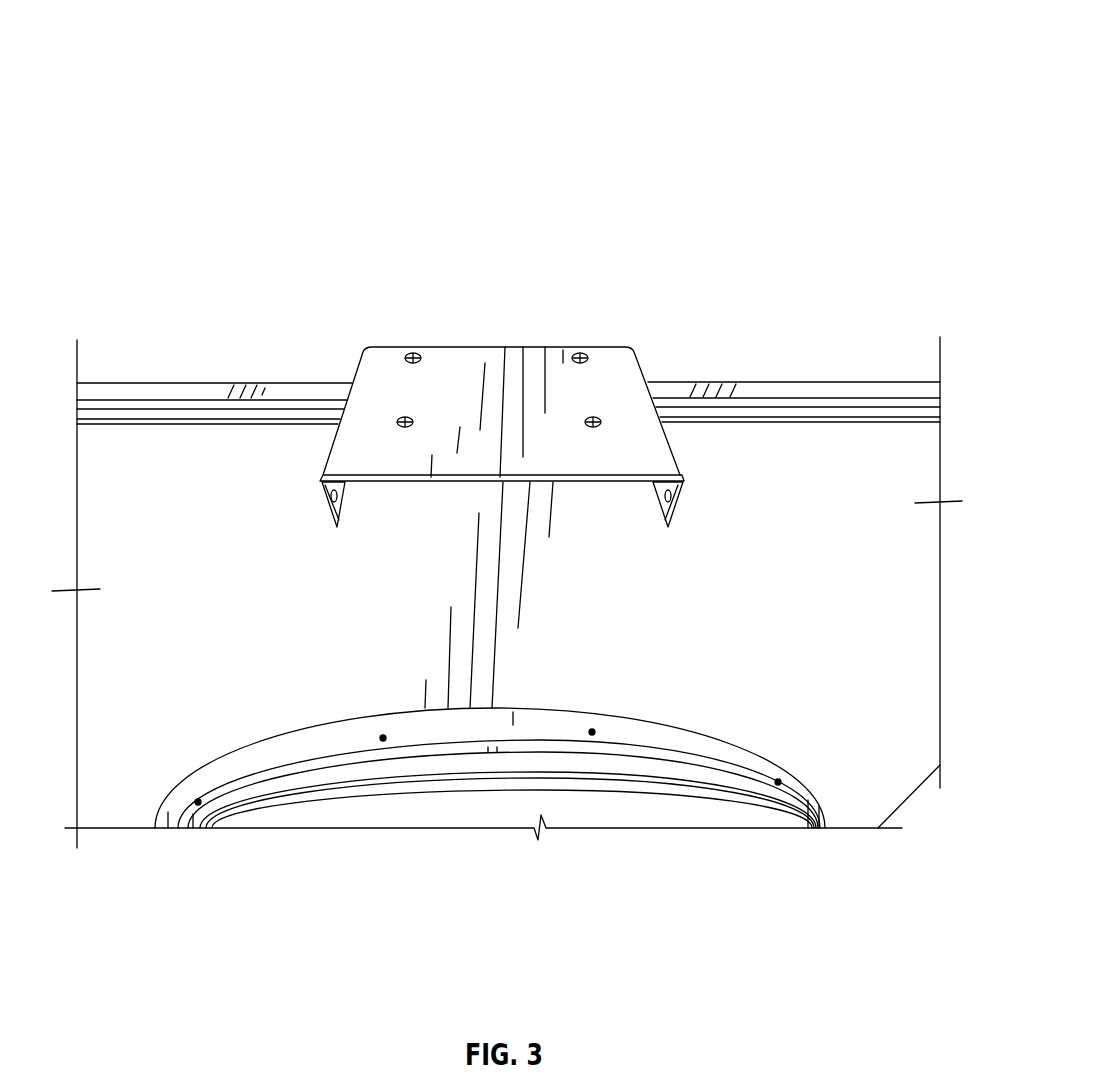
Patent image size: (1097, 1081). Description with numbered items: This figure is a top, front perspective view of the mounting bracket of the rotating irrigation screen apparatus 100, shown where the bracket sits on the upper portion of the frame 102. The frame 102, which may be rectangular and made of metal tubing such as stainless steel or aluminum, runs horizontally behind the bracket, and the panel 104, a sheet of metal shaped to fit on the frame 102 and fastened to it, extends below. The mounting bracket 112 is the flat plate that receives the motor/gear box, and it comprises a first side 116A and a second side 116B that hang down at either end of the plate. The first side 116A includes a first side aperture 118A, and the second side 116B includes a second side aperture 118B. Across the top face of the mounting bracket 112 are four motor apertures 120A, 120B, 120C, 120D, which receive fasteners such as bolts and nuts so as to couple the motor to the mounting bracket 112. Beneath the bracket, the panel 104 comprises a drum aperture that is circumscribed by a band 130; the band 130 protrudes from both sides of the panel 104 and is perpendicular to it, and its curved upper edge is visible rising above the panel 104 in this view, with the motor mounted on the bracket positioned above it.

The rotating irrigation screen apparatus 100 is at (850, 57).
The frame 102 is at (815, 388).
The panel 104 is at (782, 685).
The mounting bracket 112 is at (522, 365).
The first side 116A is at (327, 513).
The second side 116B is at (672, 512).
The first side aperture 118A is at (330, 487).
The second side aperture 118B is at (668, 485).
The motor aperture 120A is at (409, 350).
The motor aperture 120B is at (398, 412).
The motor aperture 120C is at (584, 349).
The motor aperture 120D is at (601, 410).
The band 130 is at (418, 727).